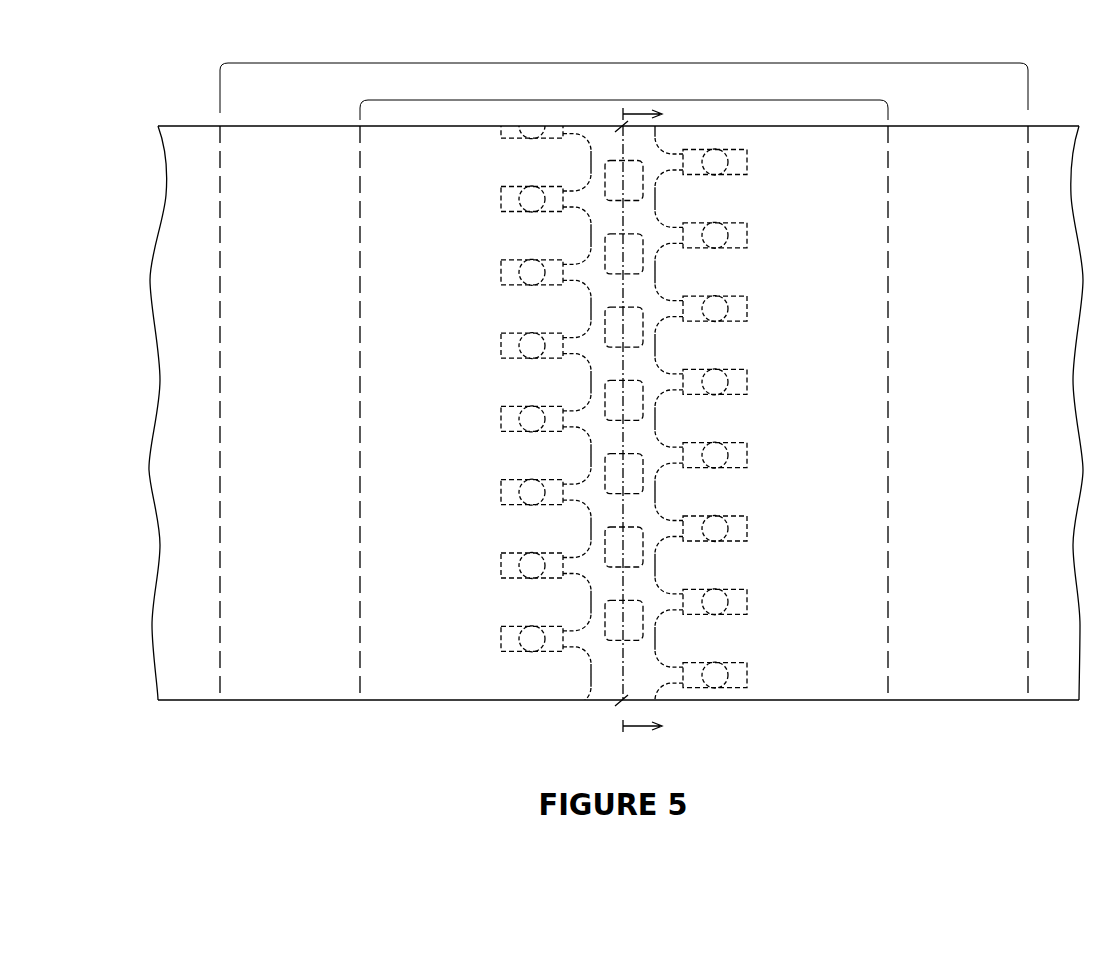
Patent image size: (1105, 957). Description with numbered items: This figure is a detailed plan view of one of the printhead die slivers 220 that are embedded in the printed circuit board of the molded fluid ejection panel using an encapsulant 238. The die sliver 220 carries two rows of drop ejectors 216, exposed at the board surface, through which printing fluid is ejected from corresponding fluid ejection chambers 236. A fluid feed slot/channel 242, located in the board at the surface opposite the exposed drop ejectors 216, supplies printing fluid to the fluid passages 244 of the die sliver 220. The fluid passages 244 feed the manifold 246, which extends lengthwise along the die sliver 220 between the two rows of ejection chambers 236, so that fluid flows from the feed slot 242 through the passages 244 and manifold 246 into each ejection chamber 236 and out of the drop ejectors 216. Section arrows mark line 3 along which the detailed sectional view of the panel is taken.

The section line 3- 3 is at (633, 420).
The drop ejectors 216 is at (715, 232).
The printhead die sliver 220 is at (649, 63).
The fluid ejection chambers 236 is at (752, 310).
The encapsulant 238 is at (197, 130).
The fluid feed slot/channel 242 is at (584, 100).
The fluid passage 244 is at (622, 198).
The manifold 246 is at (642, 683).